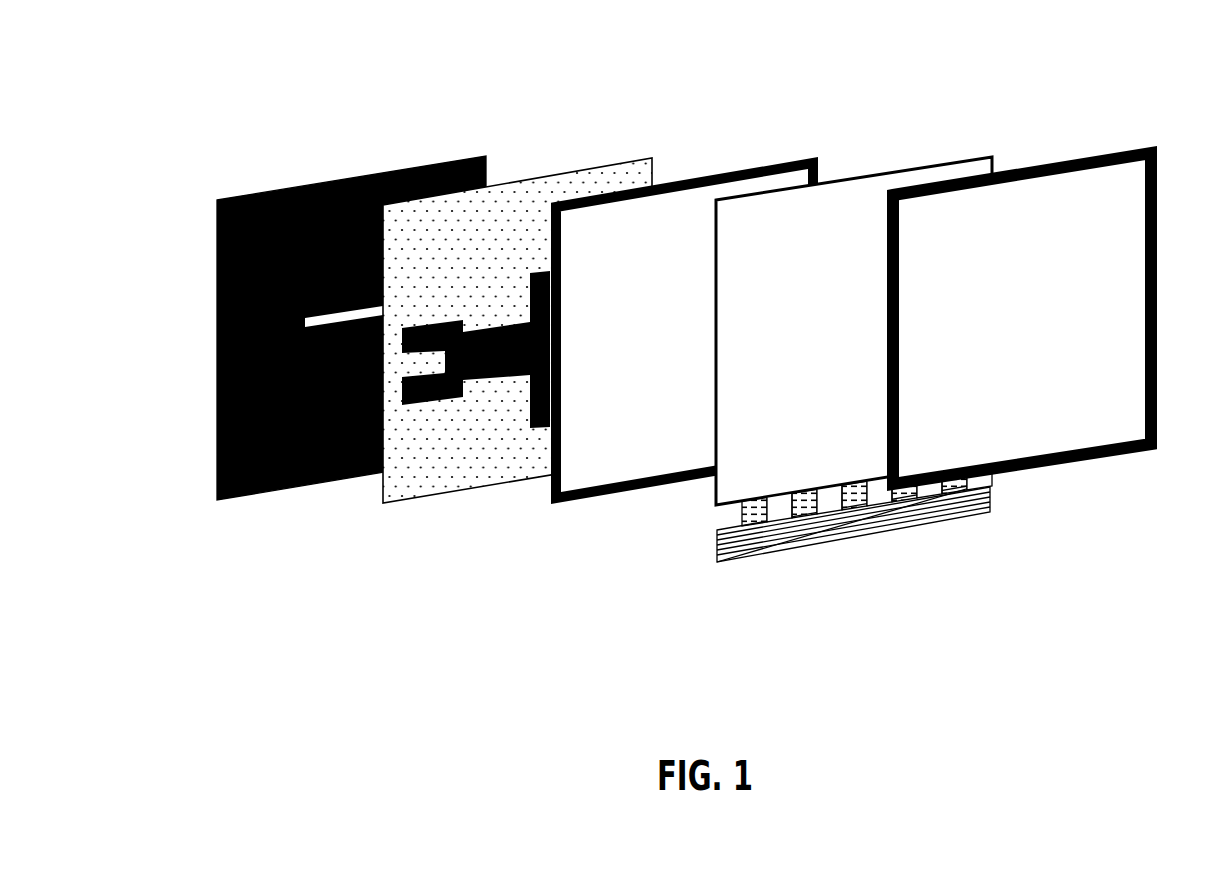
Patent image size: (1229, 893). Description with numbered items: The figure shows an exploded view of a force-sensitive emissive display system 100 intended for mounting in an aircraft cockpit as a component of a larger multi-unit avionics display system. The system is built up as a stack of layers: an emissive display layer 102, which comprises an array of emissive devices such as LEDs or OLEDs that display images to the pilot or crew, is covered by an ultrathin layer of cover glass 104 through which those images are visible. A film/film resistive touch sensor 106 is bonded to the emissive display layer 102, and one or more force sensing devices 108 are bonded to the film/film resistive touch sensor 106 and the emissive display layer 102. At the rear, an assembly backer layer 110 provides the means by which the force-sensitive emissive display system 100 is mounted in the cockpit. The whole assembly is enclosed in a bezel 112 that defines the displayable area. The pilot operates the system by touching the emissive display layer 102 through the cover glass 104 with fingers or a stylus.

The force-sensitive emissive display system 100 is at (200, 75).
The emissive display layer 102 is at (837, 205).
The cover glass 104 is at (1128, 341).
The film/film resistive touch sensor 106 is at (677, 203).
The force sensing device 108 is at (590, 173).
The assembly backer layer 110 is at (332, 180).
The bezel 112 is at (1025, 473).